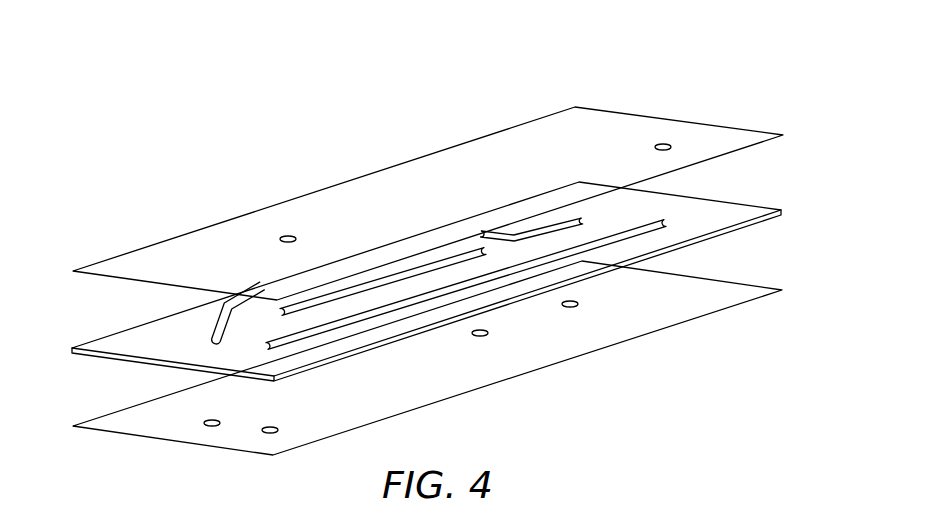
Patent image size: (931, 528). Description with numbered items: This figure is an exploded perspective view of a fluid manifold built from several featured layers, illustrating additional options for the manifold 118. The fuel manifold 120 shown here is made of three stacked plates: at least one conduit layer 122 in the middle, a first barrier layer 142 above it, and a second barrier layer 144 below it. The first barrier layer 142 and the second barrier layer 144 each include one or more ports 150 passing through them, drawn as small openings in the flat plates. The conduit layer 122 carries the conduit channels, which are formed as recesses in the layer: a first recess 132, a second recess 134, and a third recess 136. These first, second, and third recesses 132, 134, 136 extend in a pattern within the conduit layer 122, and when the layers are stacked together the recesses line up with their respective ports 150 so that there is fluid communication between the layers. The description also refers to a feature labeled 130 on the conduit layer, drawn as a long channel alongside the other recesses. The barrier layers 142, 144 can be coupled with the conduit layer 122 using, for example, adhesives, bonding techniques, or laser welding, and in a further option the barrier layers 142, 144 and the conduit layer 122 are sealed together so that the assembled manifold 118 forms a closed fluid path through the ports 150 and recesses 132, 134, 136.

The manifold 118 is at (337, 120).
The fuel manifold 120 is at (693, 36).
The conduit layer 122 is at (752, 212).
The first channel slot 130 is at (661, 221).
The first recess 132 is at (651, 232).
The second recess 134 is at (268, 309).
The third recess 136 is at (212, 332).
The first barrier layer 142 is at (755, 137).
The second barrier layer 144 is at (752, 293).
The ports 150 is at (288, 236).